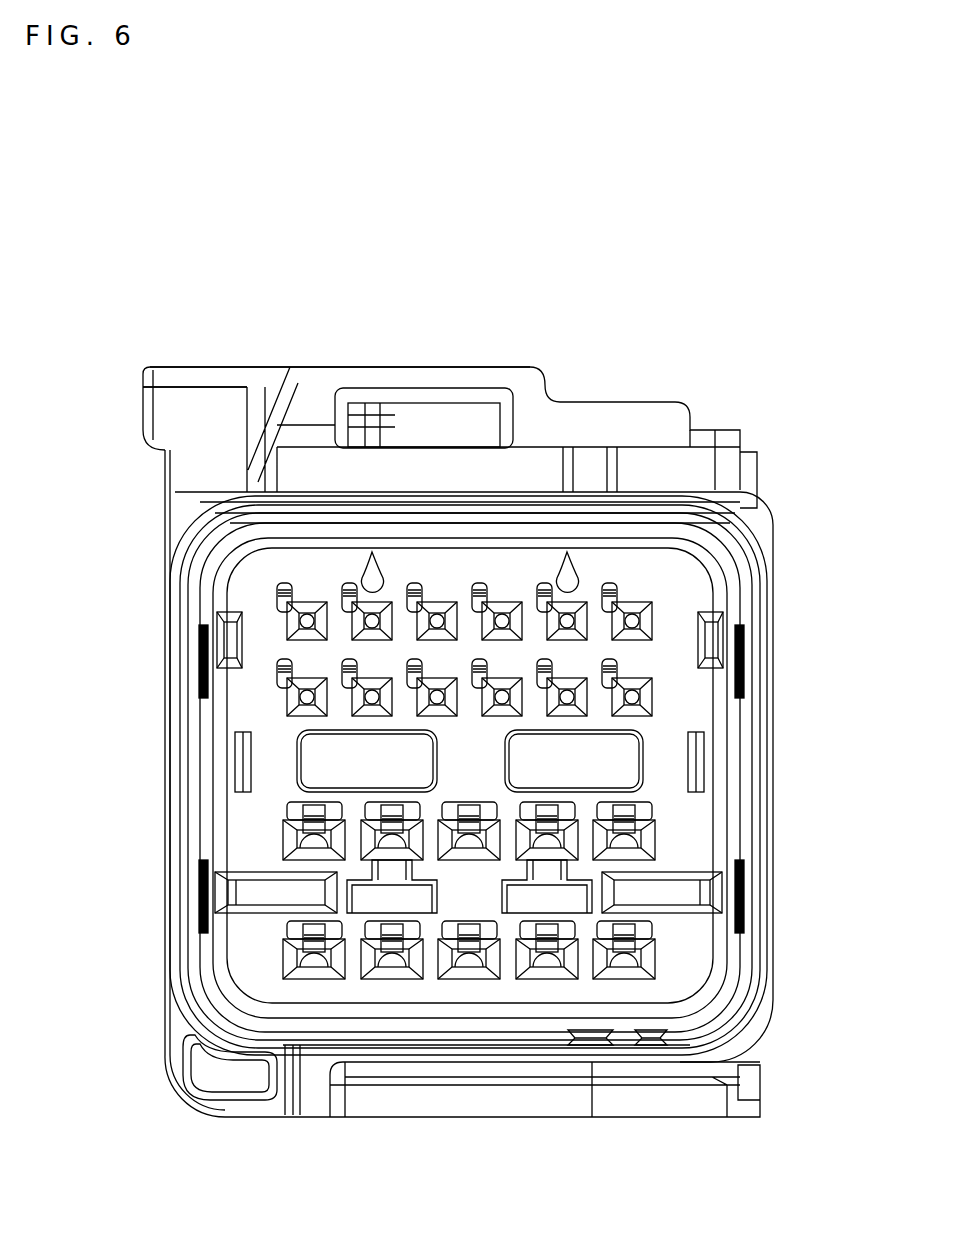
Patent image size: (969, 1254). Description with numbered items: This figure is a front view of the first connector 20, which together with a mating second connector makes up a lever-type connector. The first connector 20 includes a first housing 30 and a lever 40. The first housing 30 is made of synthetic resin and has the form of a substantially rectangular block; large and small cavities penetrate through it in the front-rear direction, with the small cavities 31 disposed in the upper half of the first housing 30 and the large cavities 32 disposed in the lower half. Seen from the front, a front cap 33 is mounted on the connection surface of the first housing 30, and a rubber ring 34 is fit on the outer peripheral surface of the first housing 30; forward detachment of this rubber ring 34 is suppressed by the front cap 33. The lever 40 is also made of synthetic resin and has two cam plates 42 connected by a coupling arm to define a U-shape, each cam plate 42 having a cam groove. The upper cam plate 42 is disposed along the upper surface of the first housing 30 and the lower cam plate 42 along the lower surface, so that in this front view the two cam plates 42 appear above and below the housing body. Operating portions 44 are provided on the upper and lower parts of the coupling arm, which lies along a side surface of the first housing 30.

The first connector 20 is at (450, 212).
The first housing 30 is at (793, 711).
The small cavities 31 is at (637, 619).
The large cavities 32 is at (626, 848).
The front cap 33 is at (680, 713).
The rubber ring 34 is at (718, 1004).
The lever 40 is at (403, 358).
The cam plates 42 is at (488, 372).
The operating portions 44 is at (146, 380).